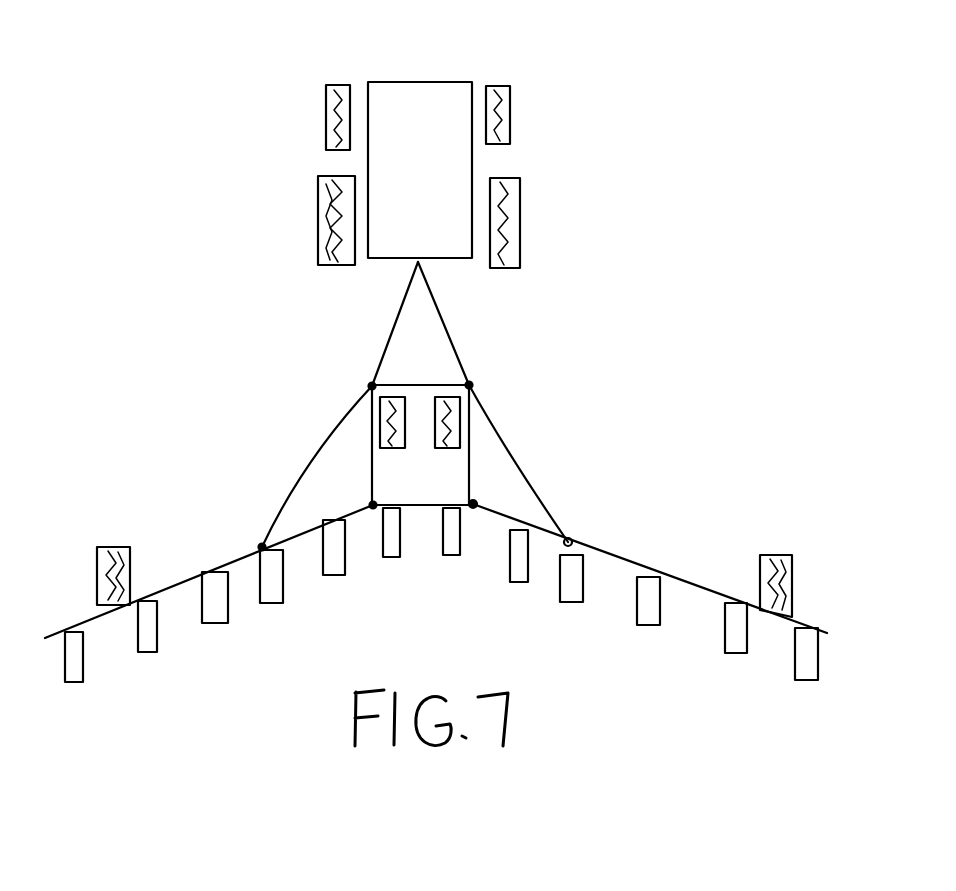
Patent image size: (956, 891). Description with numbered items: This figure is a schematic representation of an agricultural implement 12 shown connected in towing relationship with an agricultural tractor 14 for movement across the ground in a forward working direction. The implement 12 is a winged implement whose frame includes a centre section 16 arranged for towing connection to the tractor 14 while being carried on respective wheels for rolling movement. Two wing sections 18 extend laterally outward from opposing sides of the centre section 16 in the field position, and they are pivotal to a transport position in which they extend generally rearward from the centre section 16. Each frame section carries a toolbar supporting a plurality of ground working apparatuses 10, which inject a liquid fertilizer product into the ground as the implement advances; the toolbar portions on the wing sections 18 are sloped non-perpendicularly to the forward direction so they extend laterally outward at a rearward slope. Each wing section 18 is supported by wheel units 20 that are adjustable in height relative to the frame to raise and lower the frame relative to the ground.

The ground working apparatus 10 is at (63, 680).
The agricultural implement 12 is at (284, 402).
The agricultural tractor 14 is at (443, 90).
The centre section 16 is at (460, 467).
The wing sections 18 is at (182, 578).
The wheel units 20 is at (149, 533).